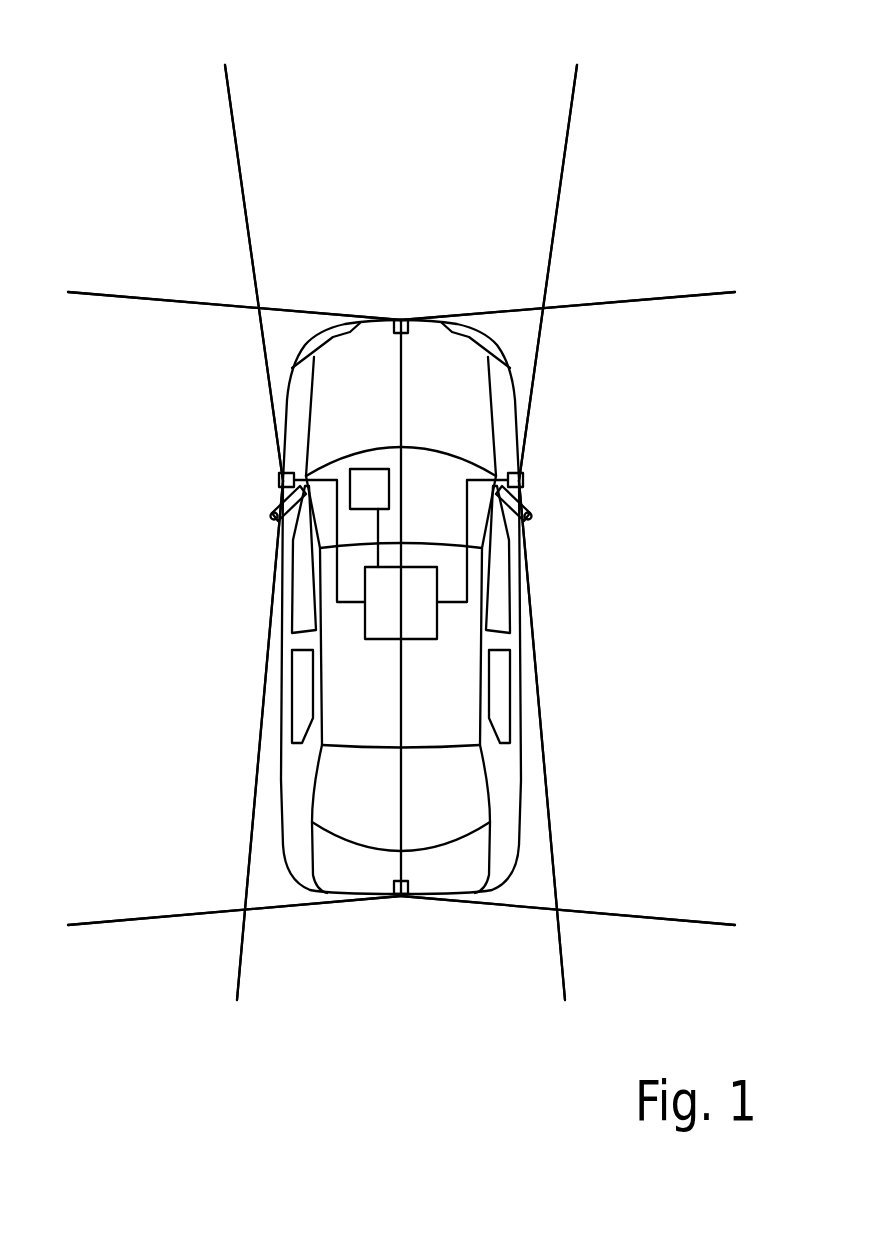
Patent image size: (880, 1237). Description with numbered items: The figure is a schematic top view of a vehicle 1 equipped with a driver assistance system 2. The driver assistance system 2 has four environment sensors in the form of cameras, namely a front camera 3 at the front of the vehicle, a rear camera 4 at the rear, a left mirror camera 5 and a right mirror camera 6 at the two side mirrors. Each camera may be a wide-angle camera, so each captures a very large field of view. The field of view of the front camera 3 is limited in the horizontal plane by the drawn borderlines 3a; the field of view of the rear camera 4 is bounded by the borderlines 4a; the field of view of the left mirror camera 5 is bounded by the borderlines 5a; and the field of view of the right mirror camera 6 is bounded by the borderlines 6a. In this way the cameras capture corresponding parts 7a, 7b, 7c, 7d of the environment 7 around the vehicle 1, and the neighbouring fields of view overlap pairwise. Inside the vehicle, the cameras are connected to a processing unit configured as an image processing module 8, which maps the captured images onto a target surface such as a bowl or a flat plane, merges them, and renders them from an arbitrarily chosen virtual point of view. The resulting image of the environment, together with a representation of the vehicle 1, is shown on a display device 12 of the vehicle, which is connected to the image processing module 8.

The vehicle 1 is at (490, 88).
The driver assistance system 2 is at (422, 348).
The front camera 3 is at (401, 305).
The borderlines 3a is at (185, 298).
The rear camera 4 is at (401, 912).
The borderlines 4a is at (165, 918).
The left mirror camera 5 is at (270, 480).
The borderlines 5a is at (268, 373).
The right mirror camera 6 is at (532, 480).
The borderlines 6a is at (535, 373).
The environment 7 is at (404, 103).
The part of the environment 7a is at (478, 170).
The part of the environment 7b is at (478, 1062).
The part of the environment 7c is at (238, 677).
The part of the environment 7d is at (708, 677).
The image processing module 8 is at (417, 640).
The display device 12 is at (372, 468).